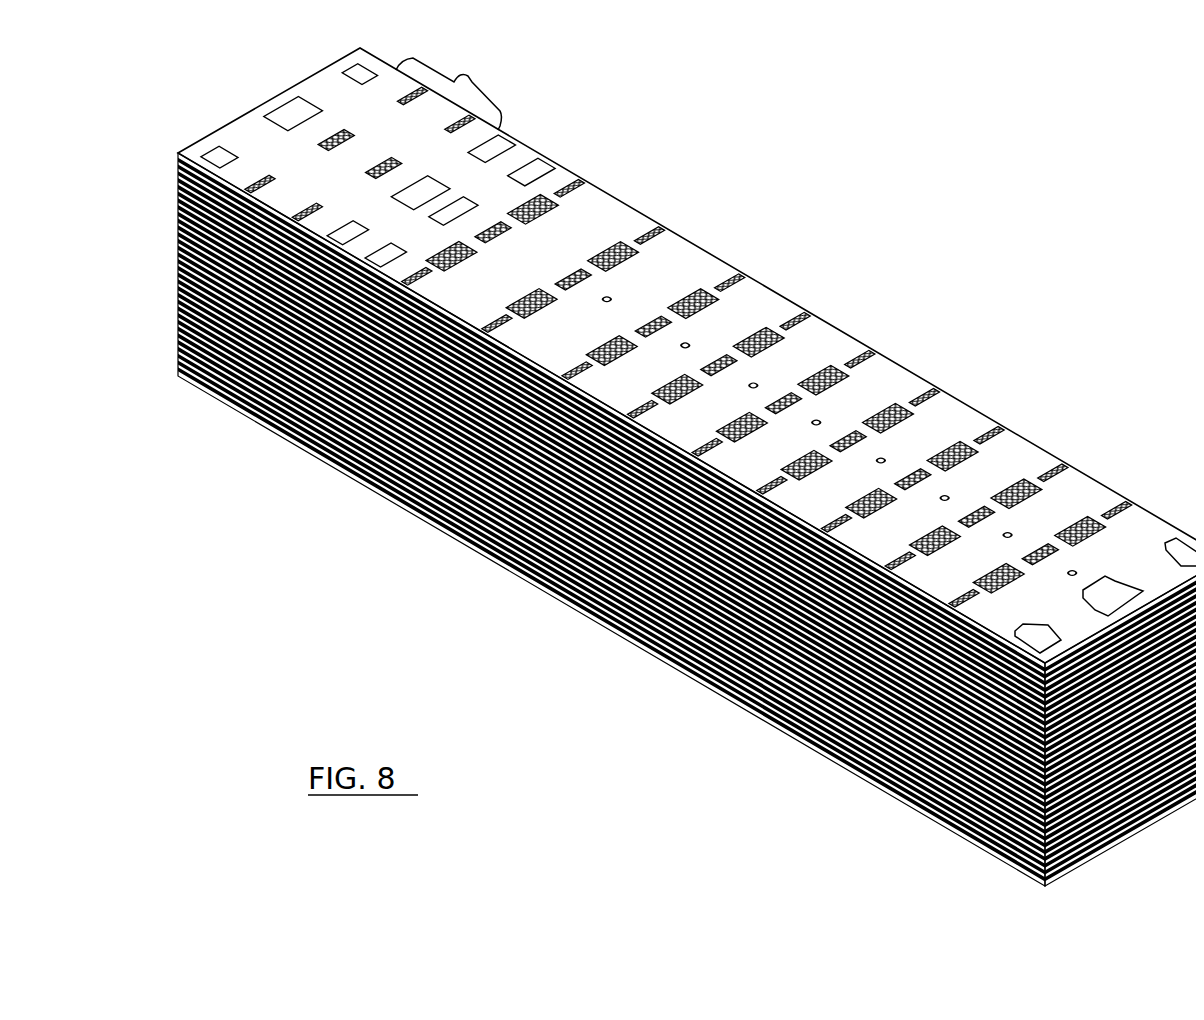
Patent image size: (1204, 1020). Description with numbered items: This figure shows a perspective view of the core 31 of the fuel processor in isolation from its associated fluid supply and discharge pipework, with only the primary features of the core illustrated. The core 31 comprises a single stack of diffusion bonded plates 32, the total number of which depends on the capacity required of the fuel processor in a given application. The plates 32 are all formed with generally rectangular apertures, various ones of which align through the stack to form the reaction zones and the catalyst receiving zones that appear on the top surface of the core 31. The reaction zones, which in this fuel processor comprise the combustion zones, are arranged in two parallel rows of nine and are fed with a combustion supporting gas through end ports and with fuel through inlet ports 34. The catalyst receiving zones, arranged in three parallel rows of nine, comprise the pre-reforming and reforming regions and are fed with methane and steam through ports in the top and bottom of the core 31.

The core 31 is at (708, 228).
The diffusion bonded plates 32 is at (562, 547).
The inlet ports 34 is at (603, 291).